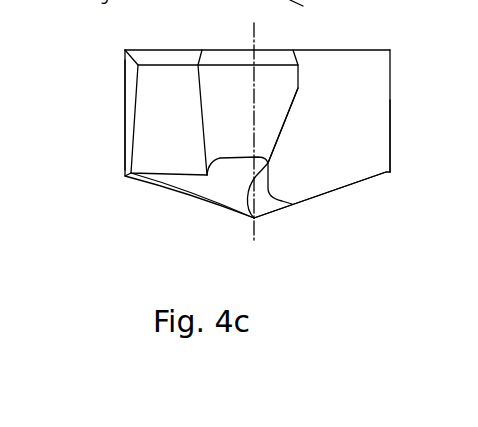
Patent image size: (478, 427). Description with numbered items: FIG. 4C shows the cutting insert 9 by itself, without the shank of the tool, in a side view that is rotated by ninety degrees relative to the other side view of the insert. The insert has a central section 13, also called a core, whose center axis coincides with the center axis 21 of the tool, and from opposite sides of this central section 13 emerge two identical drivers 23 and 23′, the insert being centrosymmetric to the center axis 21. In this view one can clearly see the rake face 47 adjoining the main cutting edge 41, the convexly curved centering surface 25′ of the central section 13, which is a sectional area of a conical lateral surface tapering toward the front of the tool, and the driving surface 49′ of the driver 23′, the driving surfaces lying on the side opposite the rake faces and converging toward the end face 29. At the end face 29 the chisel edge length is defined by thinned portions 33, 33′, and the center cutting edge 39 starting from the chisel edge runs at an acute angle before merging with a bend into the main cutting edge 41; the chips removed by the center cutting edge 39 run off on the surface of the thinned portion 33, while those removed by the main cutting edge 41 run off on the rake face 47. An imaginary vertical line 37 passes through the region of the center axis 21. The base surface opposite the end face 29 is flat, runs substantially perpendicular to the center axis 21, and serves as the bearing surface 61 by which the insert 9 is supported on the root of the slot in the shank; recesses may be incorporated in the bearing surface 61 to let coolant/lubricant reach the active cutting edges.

The cutting insert 9 is at (98, 142).
The central section 13 is at (297, 93).
The center axis 21 is at (253, 226).
The driver 23 is at (392, 85).
The driver 23′ is at (125, 100).
The centering surface 25′ is at (243, 108).
The end face 29 is at (217, 208).
The thinned portion 33 is at (300, 202).
The thinned portion 33′ is at (204, 4).
The imaginary vertical line 37 is at (306, 6).
The center cutting edge 39 is at (273, 203).
The main cutting edge 41 is at (350, 185).
The rake face 47 is at (368, 147).
The driving surface 49′ is at (182, 129).
The bearing surface 61 is at (180, 50).